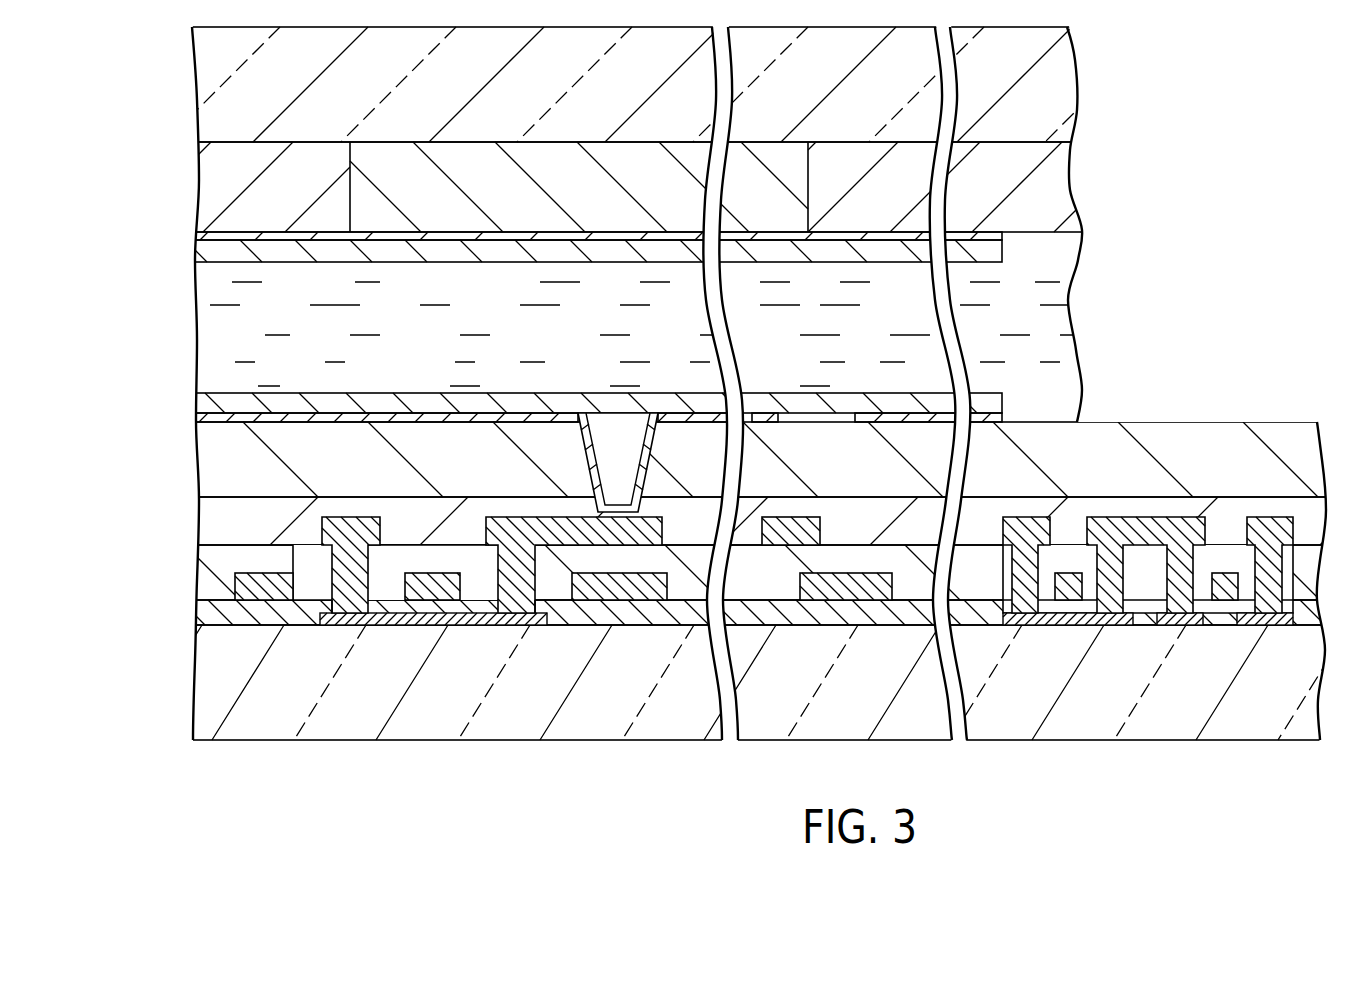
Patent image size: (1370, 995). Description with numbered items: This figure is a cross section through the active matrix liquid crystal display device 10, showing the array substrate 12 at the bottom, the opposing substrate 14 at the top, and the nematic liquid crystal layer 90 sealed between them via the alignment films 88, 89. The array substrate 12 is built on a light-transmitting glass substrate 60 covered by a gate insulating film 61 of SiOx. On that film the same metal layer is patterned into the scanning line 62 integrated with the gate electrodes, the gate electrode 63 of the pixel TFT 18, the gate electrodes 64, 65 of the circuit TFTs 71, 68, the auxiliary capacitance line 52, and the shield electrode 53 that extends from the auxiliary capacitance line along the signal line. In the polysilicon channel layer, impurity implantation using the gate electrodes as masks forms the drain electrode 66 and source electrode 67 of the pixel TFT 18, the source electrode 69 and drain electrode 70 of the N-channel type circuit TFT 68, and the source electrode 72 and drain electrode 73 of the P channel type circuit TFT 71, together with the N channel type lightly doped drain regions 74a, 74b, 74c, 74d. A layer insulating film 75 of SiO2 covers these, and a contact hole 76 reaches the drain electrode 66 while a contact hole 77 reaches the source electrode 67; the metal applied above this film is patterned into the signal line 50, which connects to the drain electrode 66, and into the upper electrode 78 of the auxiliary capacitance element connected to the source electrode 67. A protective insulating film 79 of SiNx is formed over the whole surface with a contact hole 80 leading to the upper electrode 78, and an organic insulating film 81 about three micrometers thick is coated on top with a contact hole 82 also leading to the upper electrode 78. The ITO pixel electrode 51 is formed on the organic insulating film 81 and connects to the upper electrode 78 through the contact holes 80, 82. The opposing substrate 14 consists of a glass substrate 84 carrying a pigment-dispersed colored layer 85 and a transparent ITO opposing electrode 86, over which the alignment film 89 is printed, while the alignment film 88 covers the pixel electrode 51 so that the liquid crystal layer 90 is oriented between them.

The liquid crystal display device 10 is at (735, 384).
The array substrate 12 is at (735, 531).
The opposing substrate 14 is at (667, 226).
The TFT 18 is at (435, 636).
The signal line 50 is at (348, 520).
The pixel electrode 51 is at (403, 418).
The auxiliary capacitance line 52 is at (625, 600).
The shield electrode 53 is at (835, 598).
The glass substrate 60 is at (210, 682).
The gate insulating film 61 is at (215, 616).
The scanning line 62 is at (238, 587).
The gate electrode 63 is at (432, 580).
The gate electrode 64 is at (1068, 582).
The gate electrode 65 is at (1225, 582).
The drain electrode 66 is at (356, 624).
The source electrode 67 is at (514, 626).
The N-channel type circuit TFT 68 is at (1227, 642).
The source electrode 69 is at (1280, 626).
The drain electrode 70 is at (1172, 626).
The P channel type circuit TFT 71 is at (1070, 638).
The source electrode 72 is at (1028, 626).
The drain electrode 73 is at (1112, 626).
The LDD 74a is at (392, 626).
The LDD 74b is at (478, 626).
The LDD 74c is at (1208, 626).
The LDD 74d is at (1246, 626).
The layer insulating film 75 is at (215, 553).
The contact hole 76 is at (328, 606).
The contact hole 77 is at (537, 610).
The upper electrode 78 is at (503, 524).
The protective insulating film 79 is at (210, 519).
The contact hole 80 is at (586, 508).
The organic insulating film 81 is at (210, 455).
The contact hole 82 is at (605, 440).
The glass substrate 84 is at (207, 90).
The colored layer 85 is at (200, 172).
The opposing electrode 86 is at (210, 236).
The alignment film 88 is at (207, 407).
The alignment film 89 is at (207, 256).
The liquid crystal layer 90 is at (210, 325).